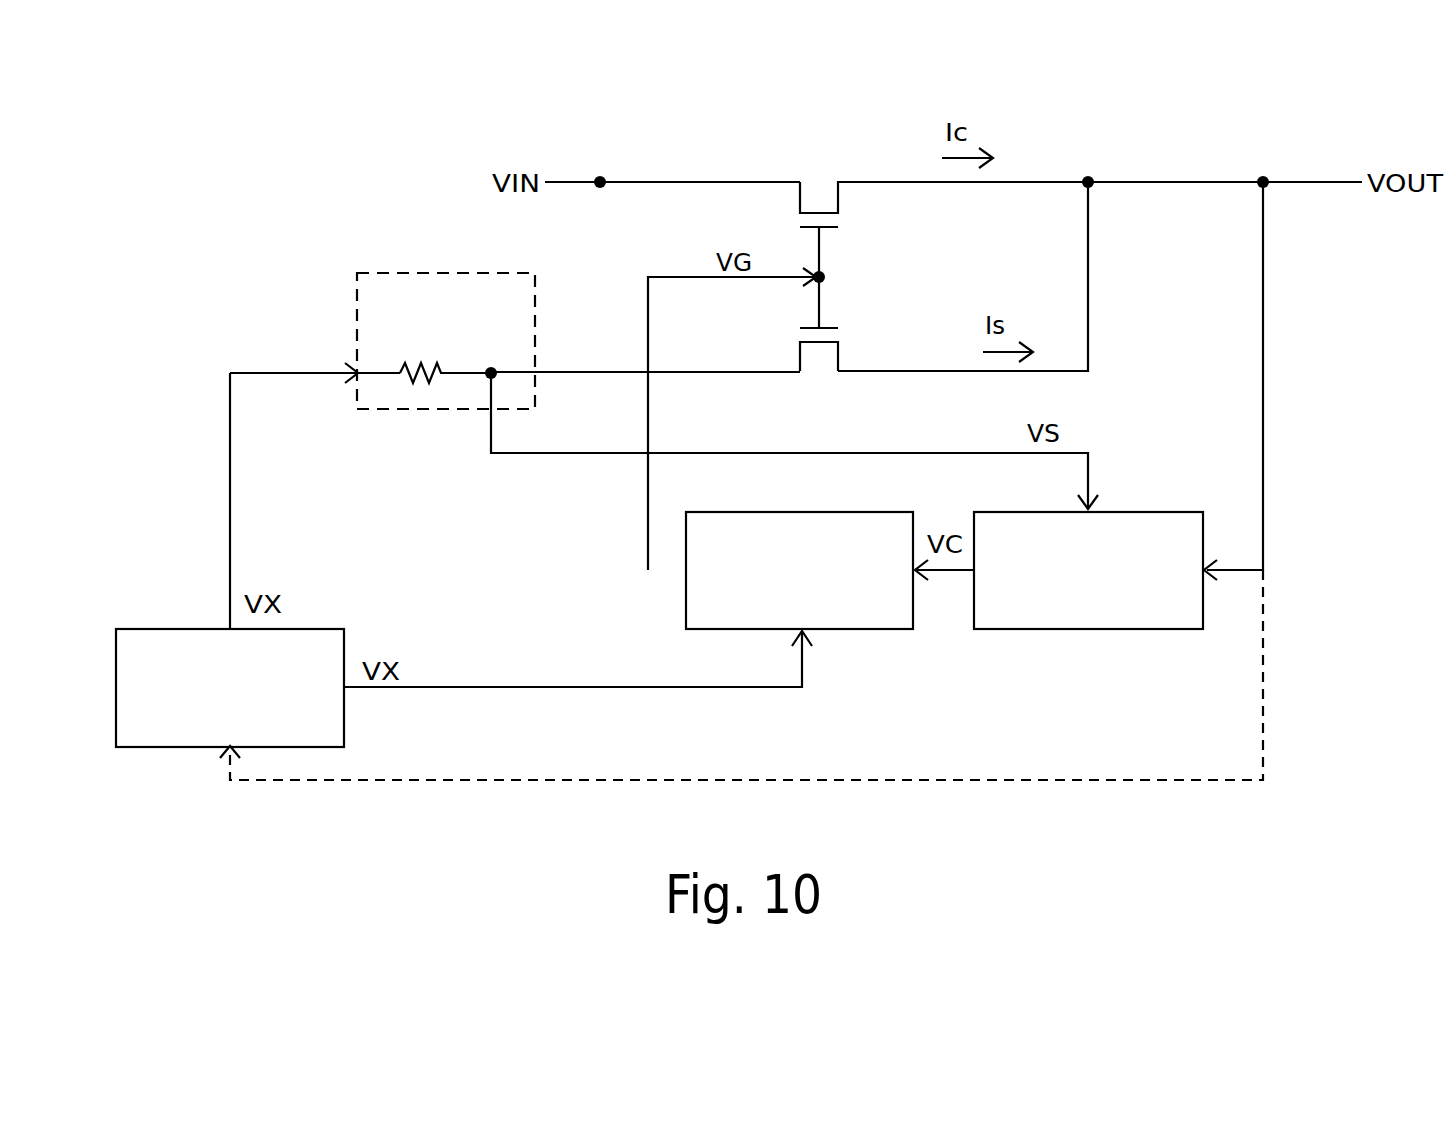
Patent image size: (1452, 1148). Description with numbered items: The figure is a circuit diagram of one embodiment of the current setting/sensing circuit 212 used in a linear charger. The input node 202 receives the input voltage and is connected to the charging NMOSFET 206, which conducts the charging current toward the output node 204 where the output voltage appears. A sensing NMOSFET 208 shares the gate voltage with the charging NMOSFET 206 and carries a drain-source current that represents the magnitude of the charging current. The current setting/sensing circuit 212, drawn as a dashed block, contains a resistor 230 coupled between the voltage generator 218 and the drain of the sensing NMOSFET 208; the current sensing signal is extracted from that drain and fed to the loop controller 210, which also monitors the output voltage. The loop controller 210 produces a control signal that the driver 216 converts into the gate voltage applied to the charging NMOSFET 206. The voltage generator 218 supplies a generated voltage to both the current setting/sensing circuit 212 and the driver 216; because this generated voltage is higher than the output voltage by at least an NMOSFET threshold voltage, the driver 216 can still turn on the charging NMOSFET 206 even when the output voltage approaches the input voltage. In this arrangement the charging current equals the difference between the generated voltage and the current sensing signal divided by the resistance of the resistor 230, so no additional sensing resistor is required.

The input node (VIN) 202 is at (602, 180).
The output node (VOUT) 204 is at (1264, 180).
The charging NMOSFET 206 is at (853, 208).
The sensing NMOSFET 208 is at (852, 347).
The loop controller 210 is at (1092, 631).
The current setting/sensing circuit 212 is at (428, 341).
The driver 216 is at (853, 631).
The voltage generator 218 is at (160, 628).
The resistor 230 is at (431, 350).